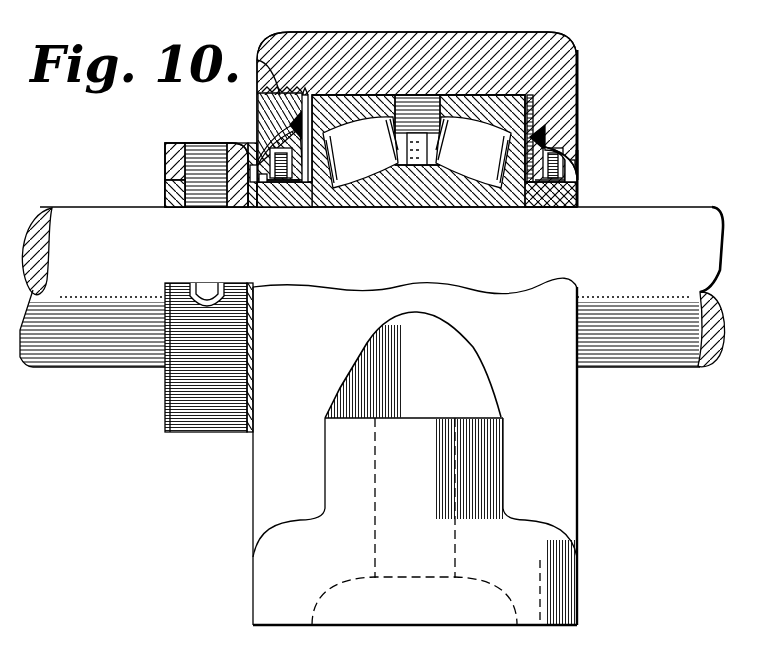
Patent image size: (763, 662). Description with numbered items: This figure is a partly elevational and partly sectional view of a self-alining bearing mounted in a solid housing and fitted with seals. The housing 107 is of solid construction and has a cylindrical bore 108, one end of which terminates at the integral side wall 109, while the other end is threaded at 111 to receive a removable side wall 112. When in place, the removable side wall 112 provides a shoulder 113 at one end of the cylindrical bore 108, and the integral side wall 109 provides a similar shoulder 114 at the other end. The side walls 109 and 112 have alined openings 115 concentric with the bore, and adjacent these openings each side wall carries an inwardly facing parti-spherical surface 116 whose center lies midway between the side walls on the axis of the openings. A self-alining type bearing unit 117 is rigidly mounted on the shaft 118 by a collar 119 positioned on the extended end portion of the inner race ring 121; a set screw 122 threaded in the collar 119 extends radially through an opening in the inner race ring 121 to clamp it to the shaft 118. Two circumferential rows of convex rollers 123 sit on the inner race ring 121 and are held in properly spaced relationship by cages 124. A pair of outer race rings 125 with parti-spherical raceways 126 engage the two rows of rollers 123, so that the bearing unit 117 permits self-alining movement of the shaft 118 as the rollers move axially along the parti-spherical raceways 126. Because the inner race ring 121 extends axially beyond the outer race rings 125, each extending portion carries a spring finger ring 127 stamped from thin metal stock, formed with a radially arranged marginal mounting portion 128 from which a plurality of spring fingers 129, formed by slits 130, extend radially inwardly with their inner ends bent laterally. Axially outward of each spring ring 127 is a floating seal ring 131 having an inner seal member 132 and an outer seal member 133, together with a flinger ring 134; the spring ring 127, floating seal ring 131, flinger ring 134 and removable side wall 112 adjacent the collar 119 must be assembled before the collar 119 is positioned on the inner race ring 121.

The housing 107 is at (573, 418).
The cylindrical bore 108 is at (418, 95).
The integral side wall 109 is at (568, 118).
The threaded end 111 is at (260, 77).
The removable side wall 112 is at (262, 119).
The shoulder 113 is at (270, 97).
The shoulder 114 is at (577, 80).
The alined openings 115 is at (258, 160).
The parti-spherical surface 116 is at (265, 110).
The bearing unit 117 is at (424, 202).
The shaft 118 is at (627, 215).
The collar 119 is at (173, 163).
The inner race ring 121 is at (384, 204).
The set screw 122 is at (192, 192).
The convex rollers 123 is at (353, 178).
The cages 124 is at (339, 142).
The outer race rings 125 is at (347, 100).
The parti-spherical raceways 126 is at (363, 133).
The spring finger ring 127 is at (263, 142).
The marginal mounting portion 128 is at (328, 93).
The spring fingers 129 is at (300, 172).
The slits 130 is at (312, 180).
The floating seal ring 131 is at (249, 172).
The inner seal member 132 is at (286, 185).
The outer seal member 133 is at (254, 160).
The flinger ring 134 is at (263, 180).